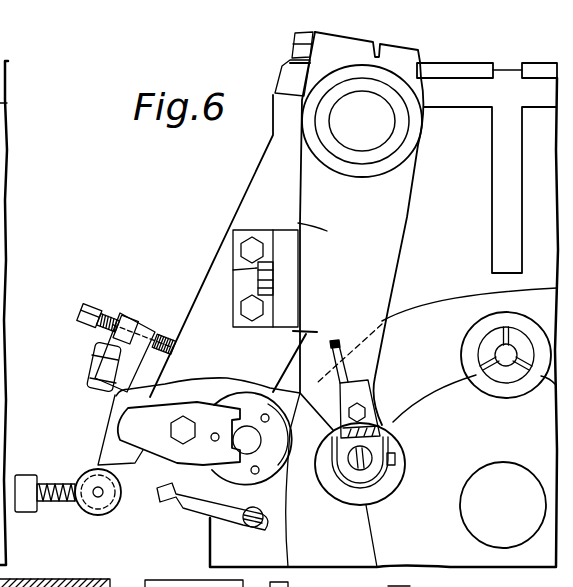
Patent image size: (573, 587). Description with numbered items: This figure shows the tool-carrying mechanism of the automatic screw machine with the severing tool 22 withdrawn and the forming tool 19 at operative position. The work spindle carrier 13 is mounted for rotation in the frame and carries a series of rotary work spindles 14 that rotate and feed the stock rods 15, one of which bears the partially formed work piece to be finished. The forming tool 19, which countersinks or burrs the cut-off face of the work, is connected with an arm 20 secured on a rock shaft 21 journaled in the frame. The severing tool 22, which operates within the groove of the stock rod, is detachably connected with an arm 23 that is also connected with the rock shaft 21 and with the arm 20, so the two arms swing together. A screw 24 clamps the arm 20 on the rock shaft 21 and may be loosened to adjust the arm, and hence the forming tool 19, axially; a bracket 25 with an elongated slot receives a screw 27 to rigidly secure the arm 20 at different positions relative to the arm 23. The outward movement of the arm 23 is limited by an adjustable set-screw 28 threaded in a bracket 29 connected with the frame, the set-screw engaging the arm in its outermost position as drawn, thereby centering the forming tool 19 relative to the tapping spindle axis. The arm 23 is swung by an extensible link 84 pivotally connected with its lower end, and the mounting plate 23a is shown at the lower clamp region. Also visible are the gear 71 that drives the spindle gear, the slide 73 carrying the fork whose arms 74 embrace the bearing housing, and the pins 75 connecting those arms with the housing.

The work spindle carrier 13 is at (457, 297).
The rotary work spindles 14 is at (470, 338).
The stock rods 15 is at (500, 354).
The forming tool 19 is at (371, 456).
The arm 20 is at (405, 211).
The rock shaft 21 is at (385, 124).
The severing tool 22 is at (290, 468).
The arm 23 is at (260, 188).
The mounting plate 23a is at (187, 455).
The screw 24 is at (305, 48).
The bracket 25 is at (268, 233).
The screw 27 is at (258, 272).
The adjustable set-screw 28 is at (110, 318).
The bracket 29 is at (110, 392).
The gear 71 is at (62, 580).
The slide 73 is at (399, 584).
The arms of the fork 74 is at (344, 572).
The pins 75 is at (288, 581).
The extensible link 84 is at (70, 463).